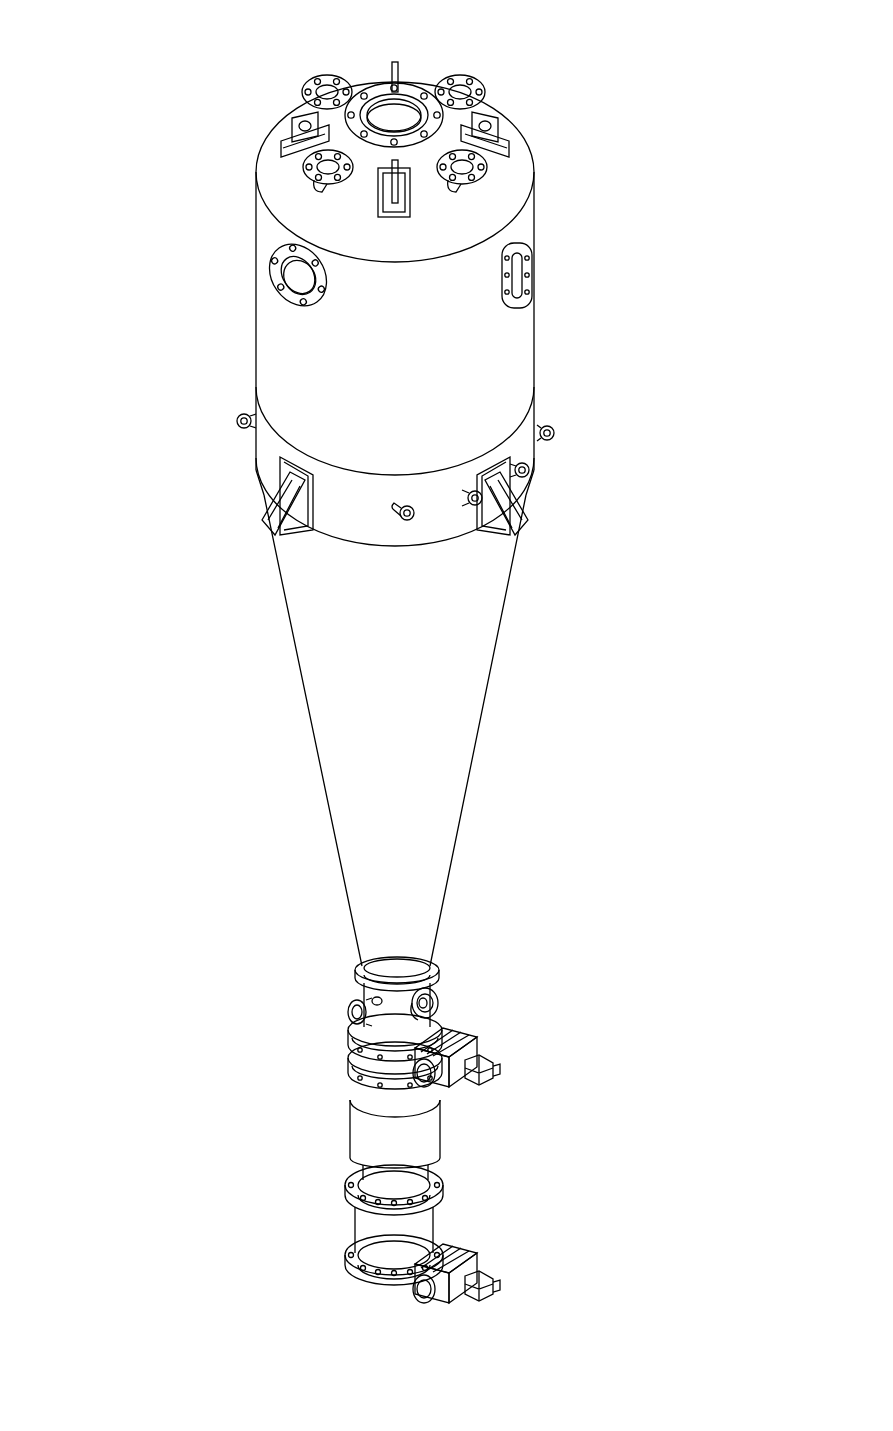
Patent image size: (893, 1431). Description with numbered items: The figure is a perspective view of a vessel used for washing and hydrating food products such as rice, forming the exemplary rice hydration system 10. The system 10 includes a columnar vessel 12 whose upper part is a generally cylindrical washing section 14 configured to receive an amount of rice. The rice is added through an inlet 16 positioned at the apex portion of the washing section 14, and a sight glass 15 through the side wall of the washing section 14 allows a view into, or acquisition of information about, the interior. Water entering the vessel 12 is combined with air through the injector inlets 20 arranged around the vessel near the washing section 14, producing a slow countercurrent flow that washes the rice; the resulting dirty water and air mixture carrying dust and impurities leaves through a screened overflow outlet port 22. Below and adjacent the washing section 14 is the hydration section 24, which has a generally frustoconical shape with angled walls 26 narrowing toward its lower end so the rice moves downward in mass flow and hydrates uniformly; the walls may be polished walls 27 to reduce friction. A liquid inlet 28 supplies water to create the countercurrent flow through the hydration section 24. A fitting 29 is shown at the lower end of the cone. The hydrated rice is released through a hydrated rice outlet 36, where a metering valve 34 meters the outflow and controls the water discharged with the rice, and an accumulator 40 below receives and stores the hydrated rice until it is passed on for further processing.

The rice hydration system 10 is at (112, 150).
The vessel 12 is at (252, 315).
The washing section 14 is at (534, 345).
The sight glass 15 is at (534, 263).
The inlet 16 is at (423, 77).
The air inlets 20 is at (557, 438).
The outlet port 22 is at (262, 248).
The hydration section 24 is at (487, 685).
The angled walls 26 is at (467, 778).
The polished walls 27 is at (468, 615).
The liquid inlet 28 is at (433, 968).
The outlet fitting 29 is at (370, 992).
The metering valve 34 is at (358, 1045).
The hydrated rice outlet 36 is at (350, 1062).
The accumulator 40 is at (449, 1134).